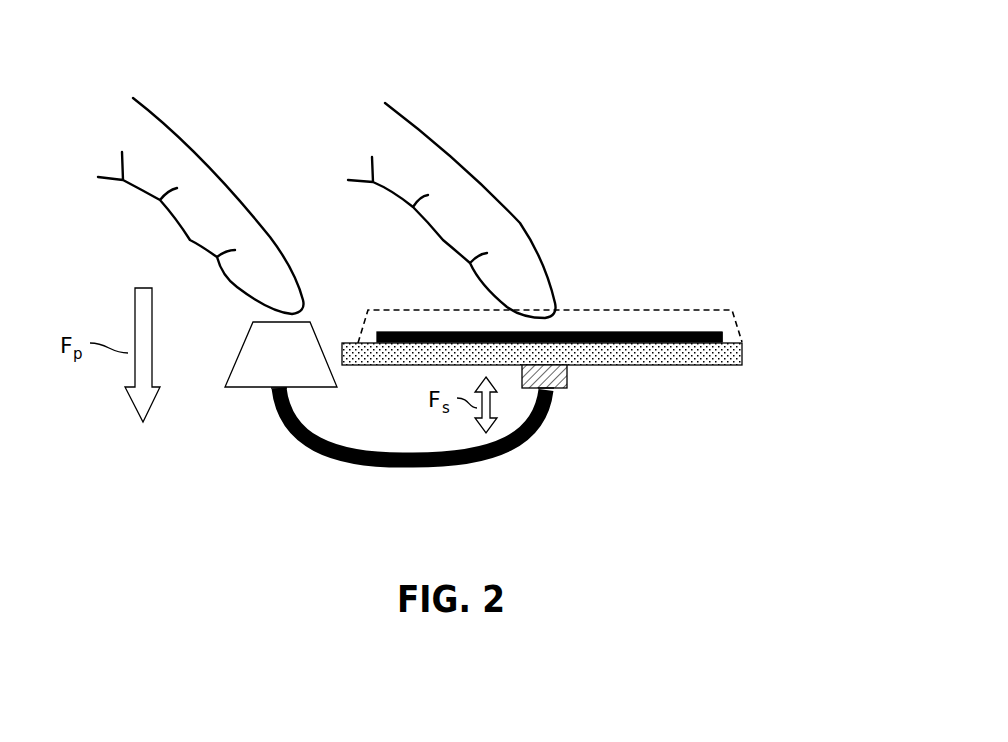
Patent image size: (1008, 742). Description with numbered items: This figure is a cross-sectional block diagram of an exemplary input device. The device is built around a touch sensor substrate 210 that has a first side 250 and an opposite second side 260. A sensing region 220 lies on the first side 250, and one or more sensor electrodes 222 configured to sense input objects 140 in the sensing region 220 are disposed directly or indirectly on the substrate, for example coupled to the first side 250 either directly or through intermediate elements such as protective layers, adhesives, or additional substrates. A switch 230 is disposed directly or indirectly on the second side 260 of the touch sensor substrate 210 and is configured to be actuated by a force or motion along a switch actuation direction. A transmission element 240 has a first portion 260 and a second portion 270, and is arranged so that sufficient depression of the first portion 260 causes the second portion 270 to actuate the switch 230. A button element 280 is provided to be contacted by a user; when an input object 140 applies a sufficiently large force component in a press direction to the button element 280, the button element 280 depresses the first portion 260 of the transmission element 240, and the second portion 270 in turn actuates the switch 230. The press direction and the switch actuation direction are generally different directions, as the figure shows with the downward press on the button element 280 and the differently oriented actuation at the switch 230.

The input object 140 is at (215, 130).
The touch sensor substrate 210 is at (750, 352).
The sensing region 220 is at (625, 310).
The sensor electrode 222 is at (693, 330).
The switch 230 is at (582, 385).
The transmission element 240 is at (410, 475).
The first side 250 is at (728, 332).
The first portion 260 is at (270, 410).
The second portion 270 is at (550, 407).
The button element 280 is at (230, 355).